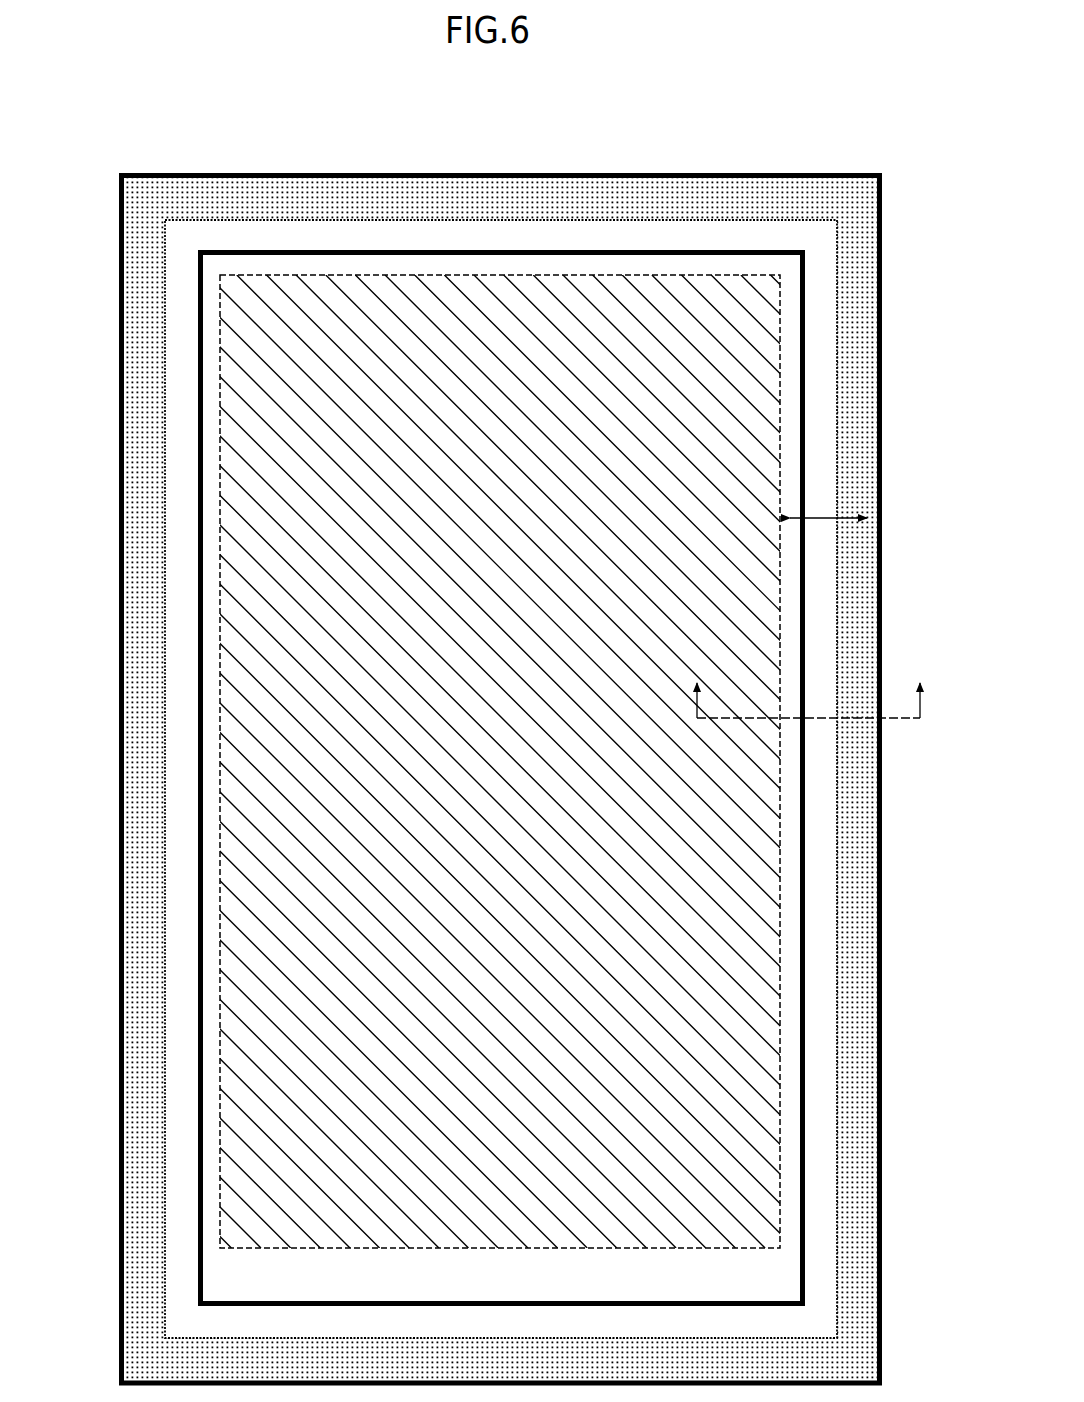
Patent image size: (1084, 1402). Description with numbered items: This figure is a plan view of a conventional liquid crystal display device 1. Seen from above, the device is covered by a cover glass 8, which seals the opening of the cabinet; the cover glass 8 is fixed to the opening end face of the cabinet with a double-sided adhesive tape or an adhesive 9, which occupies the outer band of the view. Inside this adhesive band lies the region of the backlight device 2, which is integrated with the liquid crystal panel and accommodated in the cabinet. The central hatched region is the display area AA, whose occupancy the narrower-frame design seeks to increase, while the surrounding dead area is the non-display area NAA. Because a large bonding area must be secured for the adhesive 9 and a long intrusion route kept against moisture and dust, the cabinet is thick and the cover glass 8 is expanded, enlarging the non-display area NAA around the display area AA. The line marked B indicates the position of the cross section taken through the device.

The liquid crystal display device 1 is at (468, 780).
The backlight device 2 is at (488, 251).
The cover glass 8 is at (880, 838).
The adhesive 9 is at (575, 200).
The display area AA is at (760, 597).
The non-display area NAA is at (823, 516).
The section line B- B is at (808, 679).